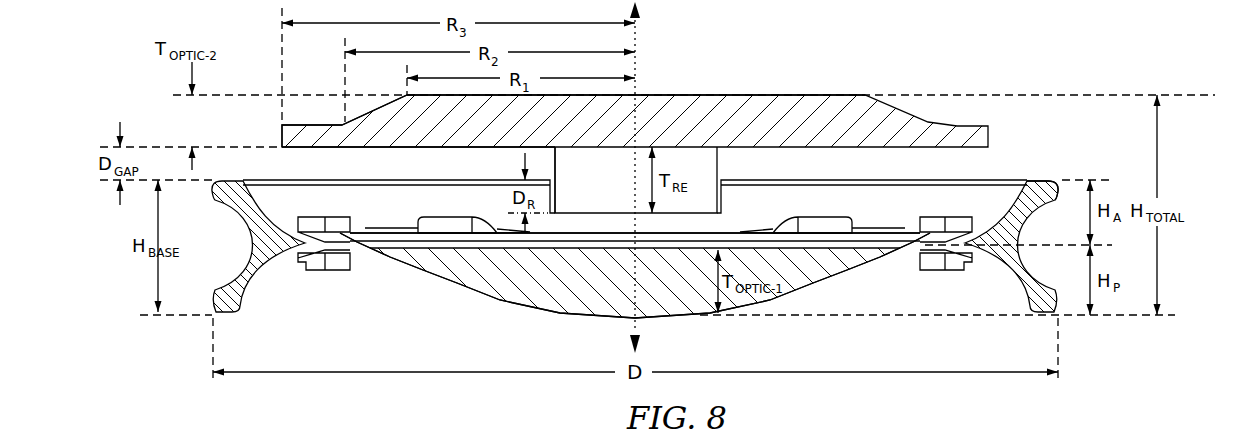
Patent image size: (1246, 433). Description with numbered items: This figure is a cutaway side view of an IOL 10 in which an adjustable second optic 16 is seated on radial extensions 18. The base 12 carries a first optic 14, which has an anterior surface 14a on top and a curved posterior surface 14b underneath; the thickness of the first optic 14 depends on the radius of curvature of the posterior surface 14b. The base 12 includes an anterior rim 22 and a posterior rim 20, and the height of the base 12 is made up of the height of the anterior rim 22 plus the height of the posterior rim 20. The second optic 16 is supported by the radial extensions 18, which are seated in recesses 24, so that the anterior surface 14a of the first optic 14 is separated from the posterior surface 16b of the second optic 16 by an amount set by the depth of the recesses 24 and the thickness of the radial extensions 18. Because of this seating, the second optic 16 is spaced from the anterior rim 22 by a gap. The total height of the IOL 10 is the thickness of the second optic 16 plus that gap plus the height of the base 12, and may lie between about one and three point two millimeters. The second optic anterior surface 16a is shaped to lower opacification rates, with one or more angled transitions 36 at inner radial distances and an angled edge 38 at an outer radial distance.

The IOL 10 is at (905, 48).
The base 12 is at (972, 181).
The first optic 14 is at (827, 281).
The anterior surface of first optic 14a is at (878, 236).
The posterior surface of first optic 14b is at (577, 318).
The second optic 16 is at (281, 140).
The second optic anterior surface 16a is at (665, 95).
The posterior surface of second optic 16b is at (425, 149).
The radial extensions 18 is at (624, 180).
The posterior rim 20 is at (1072, 325).
The anterior rim 22 is at (1062, 170).
The recesses 24 is at (558, 200).
The angled transitions 36 is at (396, 89).
The angled edge 38 is at (270, 117).